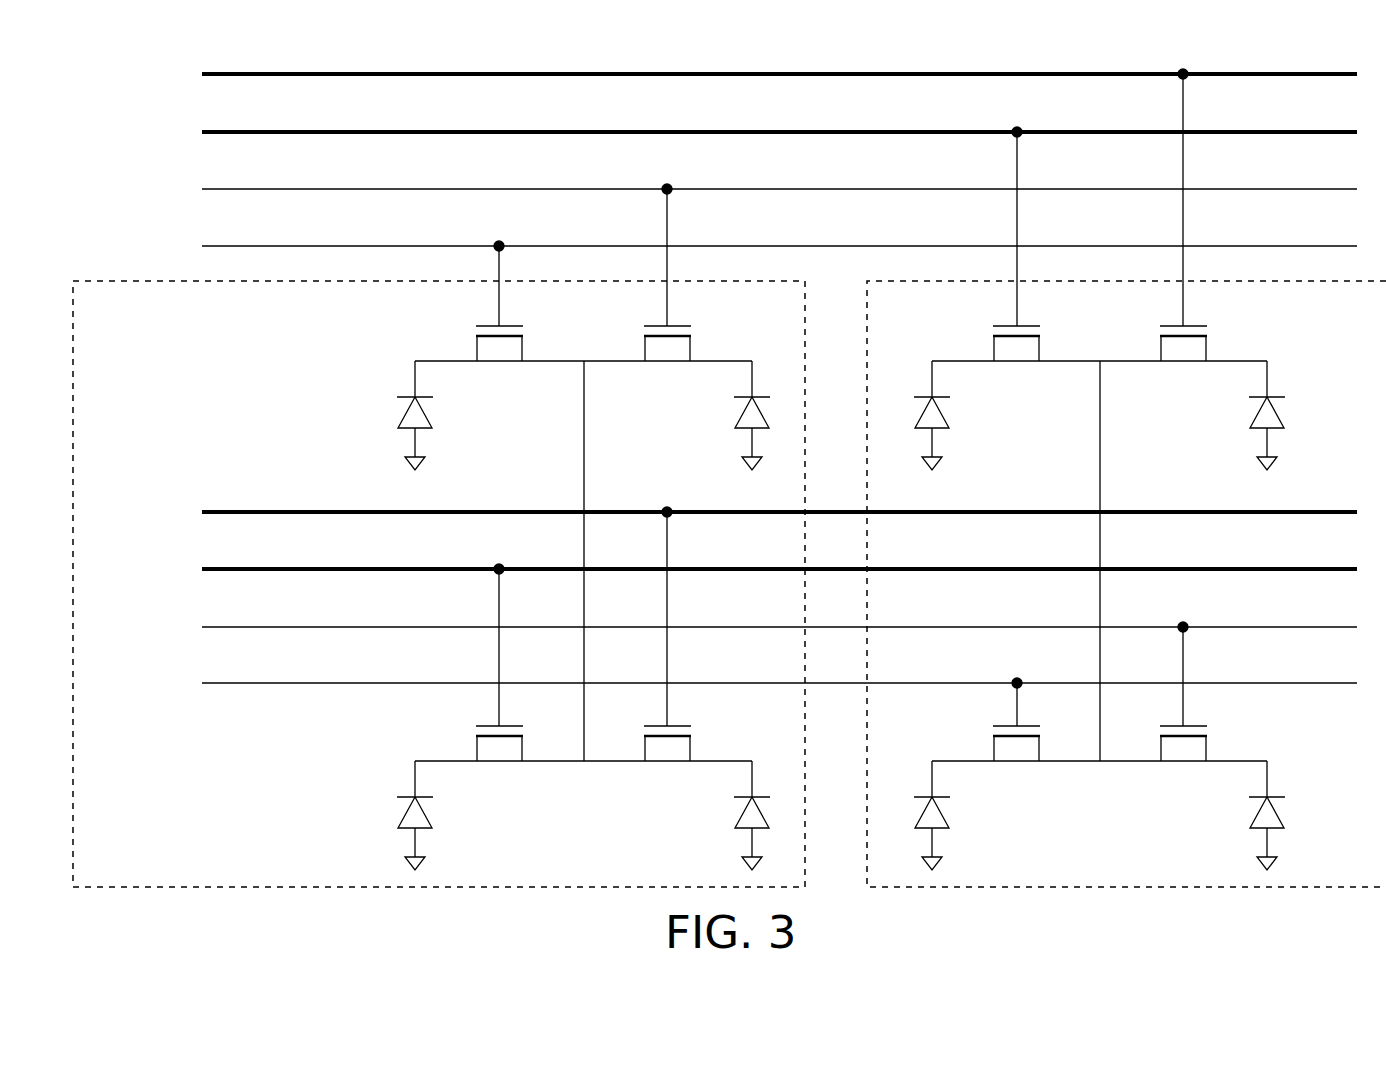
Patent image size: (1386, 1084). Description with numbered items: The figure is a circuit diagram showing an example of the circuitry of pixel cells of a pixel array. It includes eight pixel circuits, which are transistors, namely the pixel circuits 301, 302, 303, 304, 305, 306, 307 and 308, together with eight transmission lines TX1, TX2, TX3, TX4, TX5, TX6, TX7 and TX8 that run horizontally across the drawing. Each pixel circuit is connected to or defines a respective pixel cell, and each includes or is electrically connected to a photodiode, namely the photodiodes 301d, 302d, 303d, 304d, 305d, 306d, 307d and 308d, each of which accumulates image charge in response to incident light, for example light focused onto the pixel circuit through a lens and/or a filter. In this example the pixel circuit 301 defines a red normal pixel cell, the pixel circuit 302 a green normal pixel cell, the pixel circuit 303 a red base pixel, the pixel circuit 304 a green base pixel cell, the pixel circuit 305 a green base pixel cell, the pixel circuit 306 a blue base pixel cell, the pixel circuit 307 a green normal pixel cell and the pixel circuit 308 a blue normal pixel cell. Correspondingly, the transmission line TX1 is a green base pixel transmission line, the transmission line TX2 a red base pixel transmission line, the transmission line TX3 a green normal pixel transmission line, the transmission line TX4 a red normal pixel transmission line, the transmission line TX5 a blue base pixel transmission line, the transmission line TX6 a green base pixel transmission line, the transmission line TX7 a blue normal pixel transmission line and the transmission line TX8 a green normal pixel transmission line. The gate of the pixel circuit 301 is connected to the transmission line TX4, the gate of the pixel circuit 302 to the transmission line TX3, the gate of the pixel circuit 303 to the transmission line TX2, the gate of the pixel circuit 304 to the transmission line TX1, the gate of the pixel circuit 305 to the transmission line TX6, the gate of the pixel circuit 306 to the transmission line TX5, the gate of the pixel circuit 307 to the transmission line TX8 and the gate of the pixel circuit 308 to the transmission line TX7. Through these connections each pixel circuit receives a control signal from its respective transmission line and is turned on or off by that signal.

The transmission line TX1 is at (222, 74).
The transmission line TX2 is at (222, 132).
The transmission line TX3 is at (222, 189).
The transmission line TX4 is at (222, 246).
The transmission line TX5 is at (222, 512).
The transmission line TX6 is at (222, 569).
The transmission line TX7 is at (222, 627).
The transmission line TX8 is at (222, 683).
The pixel circuit 301 is at (477, 348).
The pixel circuit 302 is at (690, 348).
The pixel circuit 303 is at (994, 348).
The pixel circuit 304 is at (1206, 348).
The pixel circuit 305 is at (477, 748).
The pixel circuit 306 is at (690, 748).
The pixel circuit 307 is at (994, 748).
The pixel circuit 308 is at (1206, 748).
The photodiode 301d is at (424, 407).
The photodiode 302d is at (743, 407).
The photodiode 303d is at (941, 407).
The photodiode 304d is at (1258, 407).
The photodiode 305d is at (424, 807).
The photodiode 306d is at (743, 807).
The photodiode 307d is at (941, 807).
The photodiode 308d is at (1258, 807).